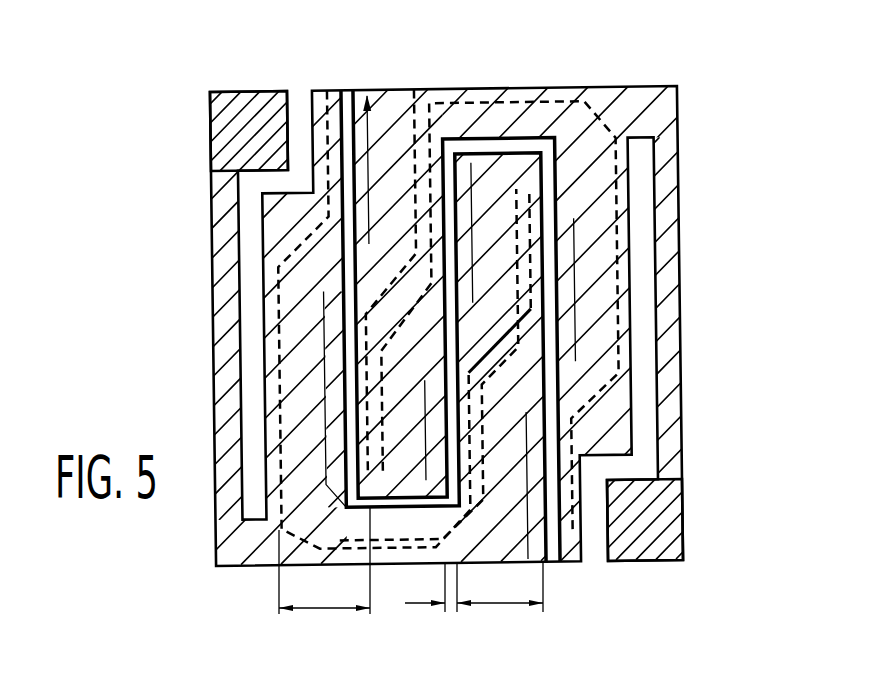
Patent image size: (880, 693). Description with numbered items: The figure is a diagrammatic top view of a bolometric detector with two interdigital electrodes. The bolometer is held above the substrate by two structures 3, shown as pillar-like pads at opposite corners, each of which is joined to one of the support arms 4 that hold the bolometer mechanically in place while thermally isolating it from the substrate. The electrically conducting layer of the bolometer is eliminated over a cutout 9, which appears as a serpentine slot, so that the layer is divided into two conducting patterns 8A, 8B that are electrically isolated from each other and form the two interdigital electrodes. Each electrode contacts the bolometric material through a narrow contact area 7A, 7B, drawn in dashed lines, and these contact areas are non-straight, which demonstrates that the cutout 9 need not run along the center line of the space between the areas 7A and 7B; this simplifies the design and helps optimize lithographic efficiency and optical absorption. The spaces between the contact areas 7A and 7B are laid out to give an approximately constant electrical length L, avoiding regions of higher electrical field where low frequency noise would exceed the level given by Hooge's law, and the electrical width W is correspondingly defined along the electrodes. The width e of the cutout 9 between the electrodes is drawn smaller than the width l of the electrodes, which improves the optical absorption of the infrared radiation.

The structure 3 is at (247, 104).
The support arm 4 is at (213, 258).
The contact area 7A is at (269, 222).
The contact area 7B is at (436, 102).
The conducting pattern 8A is at (333, 110).
The conducting pattern 8B is at (389, 115).
The cutout 9 is at (553, 172).
The electrical width W is at (292, 348).
The electrical length L is at (324, 560).
The width of the space e is at (431, 587).
The width of the electrodes l is at (500, 587).